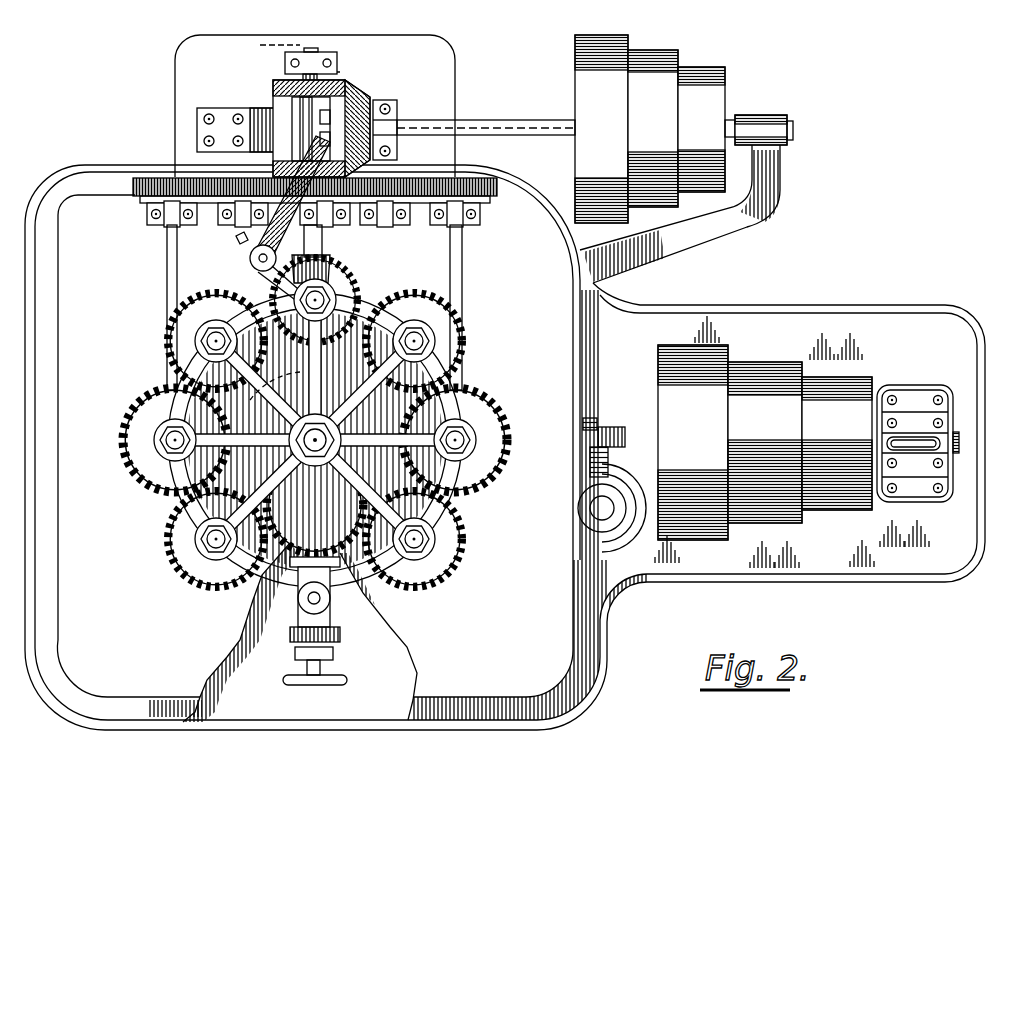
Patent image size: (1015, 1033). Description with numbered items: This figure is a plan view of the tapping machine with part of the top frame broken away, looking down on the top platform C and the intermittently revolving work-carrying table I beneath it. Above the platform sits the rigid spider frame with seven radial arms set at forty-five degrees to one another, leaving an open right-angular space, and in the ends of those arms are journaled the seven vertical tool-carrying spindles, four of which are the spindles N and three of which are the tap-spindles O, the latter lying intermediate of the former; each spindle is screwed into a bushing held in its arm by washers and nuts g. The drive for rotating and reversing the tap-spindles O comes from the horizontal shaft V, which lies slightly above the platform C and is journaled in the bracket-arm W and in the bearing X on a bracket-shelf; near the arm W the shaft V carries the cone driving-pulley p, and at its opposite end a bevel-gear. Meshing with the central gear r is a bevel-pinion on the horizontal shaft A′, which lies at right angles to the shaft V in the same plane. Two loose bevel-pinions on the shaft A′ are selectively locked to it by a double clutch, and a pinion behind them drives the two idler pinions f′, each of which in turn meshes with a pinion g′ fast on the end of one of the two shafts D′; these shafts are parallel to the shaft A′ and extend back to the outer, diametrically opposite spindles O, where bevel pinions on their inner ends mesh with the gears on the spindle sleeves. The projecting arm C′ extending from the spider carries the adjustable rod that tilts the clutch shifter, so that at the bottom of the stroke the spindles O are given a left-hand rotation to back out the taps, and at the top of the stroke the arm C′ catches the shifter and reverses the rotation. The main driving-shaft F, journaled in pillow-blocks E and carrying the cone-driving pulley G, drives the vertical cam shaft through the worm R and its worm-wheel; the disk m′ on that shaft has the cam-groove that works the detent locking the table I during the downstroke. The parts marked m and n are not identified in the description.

The pinion g′ is at (152, 178).
The idler pinion f′ is at (235, 196).
The nut g is at (352, 98).
The bearing X is at (397, 122).
The horizontal shaft V is at (490, 126).
The horizontal shaft A′ is at (323, 248).
The projecting arm C′ is at (256, 268).
The shaft D′ is at (167, 278).
The tool-carrying spindle N is at (168, 330).
The tap-spindle O is at (130, 476).
The central gear r is at (340, 280).
The center hub m is at (306, 370).
The top platform C is at (315, 505).
The work-carrying table I is at (323, 621).
The cone driving-pulley p is at (655, 129).
The bracket-arm W is at (728, 232).
The worm R is at (592, 426).
The main driving-shaft F is at (624, 436).
The disk m′ is at (628, 482).
The cone-driving pulley G is at (765, 442).
The pillow-block E is at (945, 465).
The housing corner n is at (632, 550).